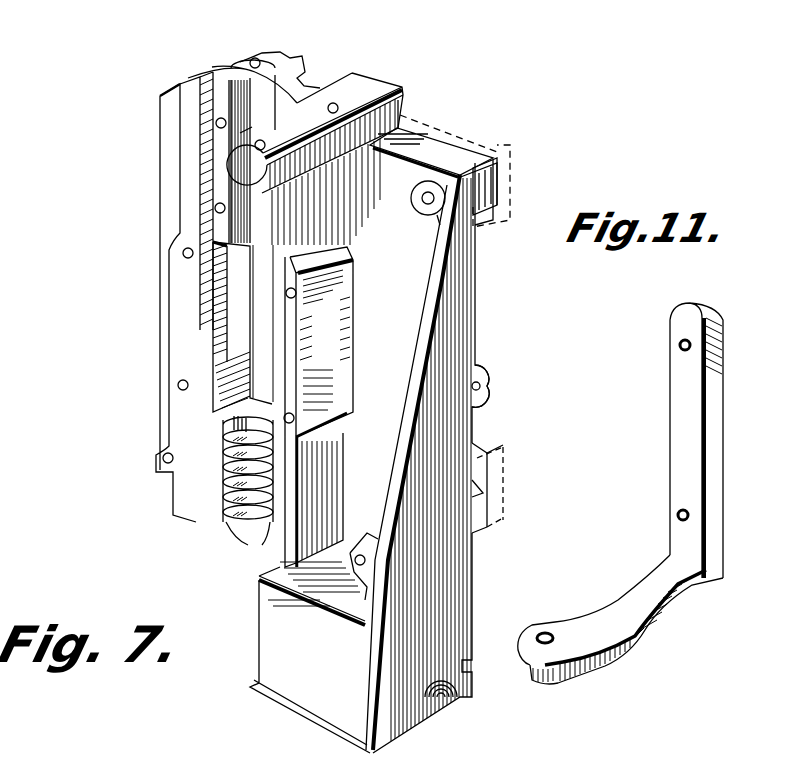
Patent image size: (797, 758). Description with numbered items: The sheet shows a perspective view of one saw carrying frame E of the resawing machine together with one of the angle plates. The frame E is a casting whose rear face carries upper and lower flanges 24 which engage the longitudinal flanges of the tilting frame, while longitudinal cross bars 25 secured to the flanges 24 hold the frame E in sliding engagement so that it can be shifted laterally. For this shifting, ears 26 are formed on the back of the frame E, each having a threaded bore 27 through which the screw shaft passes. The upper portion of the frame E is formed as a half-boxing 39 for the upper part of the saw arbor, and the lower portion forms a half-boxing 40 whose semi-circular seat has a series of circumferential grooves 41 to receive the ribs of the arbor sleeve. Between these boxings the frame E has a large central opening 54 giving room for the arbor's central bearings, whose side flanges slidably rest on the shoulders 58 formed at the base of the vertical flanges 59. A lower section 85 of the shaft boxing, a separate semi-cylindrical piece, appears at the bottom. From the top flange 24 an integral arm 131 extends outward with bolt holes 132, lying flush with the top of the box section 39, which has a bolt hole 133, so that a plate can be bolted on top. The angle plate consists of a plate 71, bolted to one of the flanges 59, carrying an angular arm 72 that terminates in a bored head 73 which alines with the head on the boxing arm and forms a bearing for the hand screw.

In FIG. 7, the saw carrying frame E is at (460, 318).
In FIG. 7, the upper and lower flanges 24 is at (497, 150).
In FIG. 7, the longitudinal cross bars 25 is at (517, 163).
In FIG. 7, the ears 26 is at (487, 383).
In FIG. 7, the threaded bores 27 is at (482, 382).
In FIG. 7, the half-boxing 39 is at (285, 62).
In FIG. 7, the half-boxing 40 is at (213, 472).
In FIG. 7, the circumferential grooves 41 is at (233, 518).
In FIG. 7, the central opening 54 is at (237, 310).
In FIG. 7, the shoulders 58 is at (197, 268).
In FIG. 7, the vertical flanges 59 is at (188, 189).
In FIG. 7, the lower section of boxing 85 is at (430, 700).
In FIG. 7, the integral arm 131 is at (378, 95).
In FIG. 7, the bolt holes 132 is at (330, 114).
In FIG. 7, the bolt hole 133 is at (255, 58).
In FIG. 11, the plate 71 is at (678, 417).
In FIG. 11, the angular arm 72 is at (623, 607).
In FIG. 11, the bored head 73 is at (550, 633).